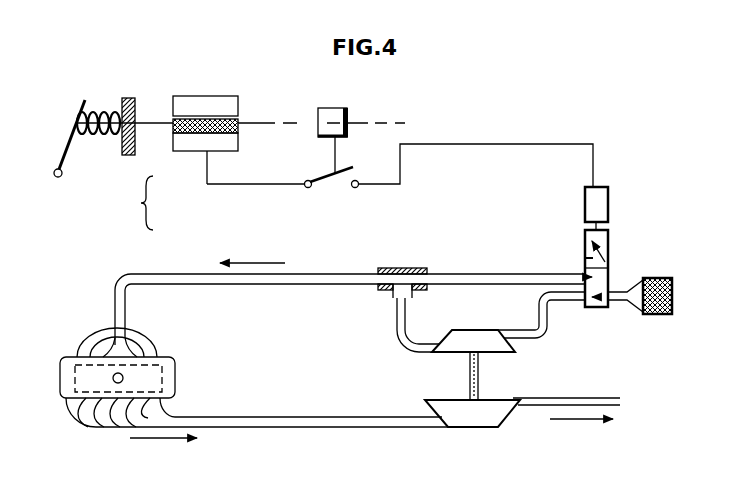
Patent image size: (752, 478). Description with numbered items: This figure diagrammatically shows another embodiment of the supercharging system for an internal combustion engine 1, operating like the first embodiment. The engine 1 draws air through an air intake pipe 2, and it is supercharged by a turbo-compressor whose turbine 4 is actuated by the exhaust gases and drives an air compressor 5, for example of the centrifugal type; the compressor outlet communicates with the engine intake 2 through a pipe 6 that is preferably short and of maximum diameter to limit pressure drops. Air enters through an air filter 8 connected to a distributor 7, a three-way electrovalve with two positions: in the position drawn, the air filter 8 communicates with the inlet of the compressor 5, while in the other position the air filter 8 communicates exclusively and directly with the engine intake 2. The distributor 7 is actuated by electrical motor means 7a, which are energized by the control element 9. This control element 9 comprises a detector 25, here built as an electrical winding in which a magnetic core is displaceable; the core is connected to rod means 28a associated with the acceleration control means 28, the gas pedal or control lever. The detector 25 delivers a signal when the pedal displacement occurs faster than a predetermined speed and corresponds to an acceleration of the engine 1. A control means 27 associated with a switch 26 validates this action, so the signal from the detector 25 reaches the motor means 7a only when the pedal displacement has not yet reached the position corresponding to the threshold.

The internal combustion engine 1 is at (178, 367).
The air intake pipe 2 is at (401, 268).
The turbine 4 is at (483, 403).
The air compressor 5 is at (457, 345).
The pipe 6 is at (396, 327).
The distributor 7 is at (601, 316).
The electrical motor means 7a is at (608, 203).
The air filter 8 is at (662, 278).
The control element 9 is at (141, 203).
The detector 25 is at (182, 152).
The switch 26 is at (320, 188).
The control means 27 is at (313, 136).
The acceleration control means 28 is at (70, 131).
The rod means 28a is at (280, 120).